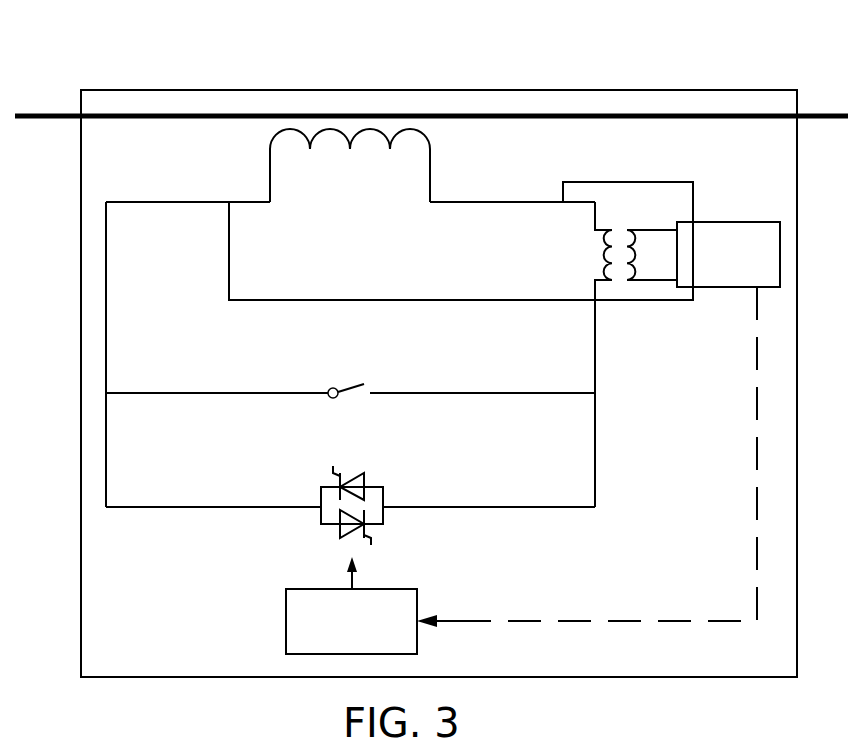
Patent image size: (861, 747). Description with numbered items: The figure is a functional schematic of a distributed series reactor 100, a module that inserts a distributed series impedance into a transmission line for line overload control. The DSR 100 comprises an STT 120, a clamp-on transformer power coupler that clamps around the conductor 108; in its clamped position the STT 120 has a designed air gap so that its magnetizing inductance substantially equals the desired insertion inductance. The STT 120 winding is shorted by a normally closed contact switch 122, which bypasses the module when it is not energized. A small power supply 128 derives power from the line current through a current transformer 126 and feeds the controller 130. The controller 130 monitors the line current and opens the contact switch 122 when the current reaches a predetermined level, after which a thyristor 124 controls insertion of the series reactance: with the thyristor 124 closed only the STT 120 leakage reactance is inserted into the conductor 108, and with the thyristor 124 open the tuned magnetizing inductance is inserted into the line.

The distributed series reactor 100 is at (783, 668).
The conductor 108 is at (33, 116).
The STT 120 is at (352, 140).
The contact switch 122 is at (355, 388).
The thyristor 124 is at (352, 468).
The current transformer 126 is at (618, 253).
The power supply 128 is at (733, 288).
The controller 130 is at (286, 629).